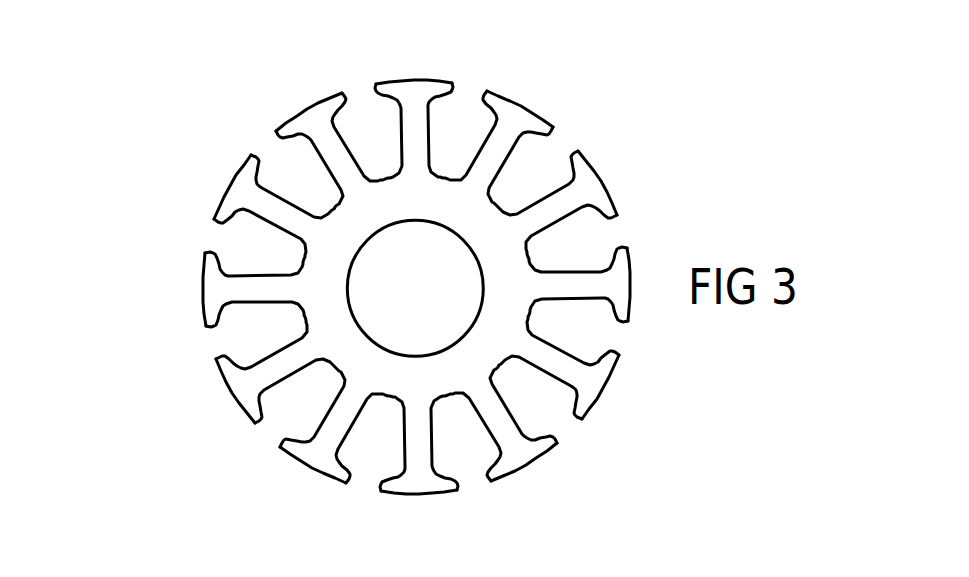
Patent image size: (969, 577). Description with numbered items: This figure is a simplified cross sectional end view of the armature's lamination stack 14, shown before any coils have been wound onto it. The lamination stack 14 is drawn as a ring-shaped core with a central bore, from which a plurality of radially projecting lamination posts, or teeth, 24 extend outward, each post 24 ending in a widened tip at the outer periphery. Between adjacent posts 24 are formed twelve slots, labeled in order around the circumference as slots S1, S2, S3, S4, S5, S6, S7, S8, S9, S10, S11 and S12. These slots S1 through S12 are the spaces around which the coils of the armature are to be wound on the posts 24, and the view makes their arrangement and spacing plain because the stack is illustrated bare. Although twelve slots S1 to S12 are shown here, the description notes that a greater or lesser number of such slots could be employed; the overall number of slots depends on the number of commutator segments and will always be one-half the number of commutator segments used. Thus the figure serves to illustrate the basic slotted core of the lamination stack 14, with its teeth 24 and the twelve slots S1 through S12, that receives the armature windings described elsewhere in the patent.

The lamination stack 14 is at (141, 167).
The lamination posts 24 is at (413, 88).
The slot S1 is at (363, 97).
The slot S2 is at (476, 90).
The slot S3 is at (562, 144).
The slot S4 is at (613, 234).
The slot S5 is at (613, 336).
The slot S6 is at (560, 422).
The slot S7 is at (469, 468).
The slot S8 is at (362, 472).
The slot S9 is at (276, 420).
The slot S10 is at (221, 342).
The slot S11 is at (215, 242).
The slot S12 is at (272, 152).